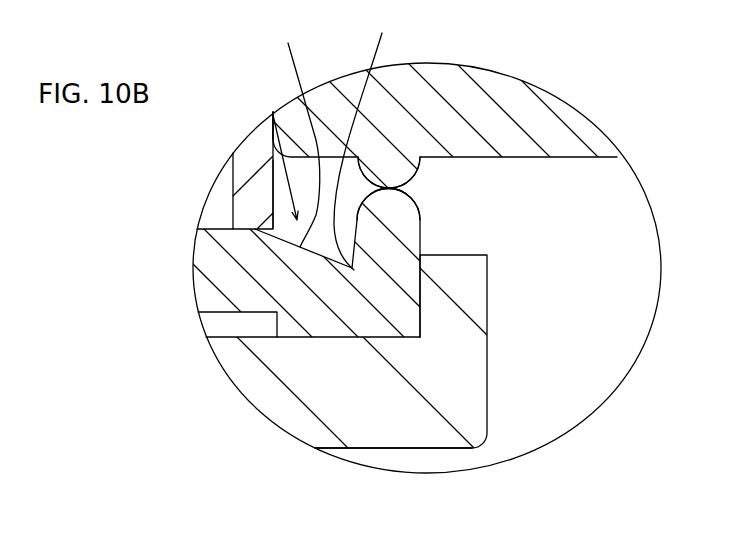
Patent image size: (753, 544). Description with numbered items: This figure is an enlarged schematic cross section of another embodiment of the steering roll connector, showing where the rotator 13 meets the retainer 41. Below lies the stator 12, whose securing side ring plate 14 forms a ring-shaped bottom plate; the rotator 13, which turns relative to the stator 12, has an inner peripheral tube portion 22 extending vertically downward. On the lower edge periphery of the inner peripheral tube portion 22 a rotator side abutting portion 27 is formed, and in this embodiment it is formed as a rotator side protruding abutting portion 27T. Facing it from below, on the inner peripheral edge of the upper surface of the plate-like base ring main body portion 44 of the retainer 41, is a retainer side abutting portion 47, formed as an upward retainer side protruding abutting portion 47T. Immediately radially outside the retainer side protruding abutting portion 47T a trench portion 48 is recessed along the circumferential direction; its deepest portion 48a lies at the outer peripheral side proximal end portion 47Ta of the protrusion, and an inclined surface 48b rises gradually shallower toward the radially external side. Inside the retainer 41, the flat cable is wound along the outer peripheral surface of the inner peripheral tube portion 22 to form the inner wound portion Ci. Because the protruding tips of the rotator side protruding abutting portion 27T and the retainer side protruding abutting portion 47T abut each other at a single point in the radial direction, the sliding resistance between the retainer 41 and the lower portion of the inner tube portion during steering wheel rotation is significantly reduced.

The stator 12 is at (428, 456).
The securing side ring plate 14 is at (380, 448).
The retainer 41 is at (230, 321).
The base ring main body portion 44 is at (210, 227).
The inner wound portion Ci is at (233, 210).
The trench portion 48 is at (233, 150).
The inner peripheral tube portion 22 is at (273, 153).
The rotator 13 is at (264, 105).
The inclined surface 48b is at (298, 130).
The deepest portion 48a is at (388, 138).
The retainer side abutting portion 47 is at (388, 204).
The retainer side protruding abutting portion 47T is at (389, 187).
The outer peripheral side proximal end portion 47Ta is at (388, 189).
The rotator side abutting portion 27 is at (392, 187).
The rotator side protruding abutting portion 27T is at (389, 172).